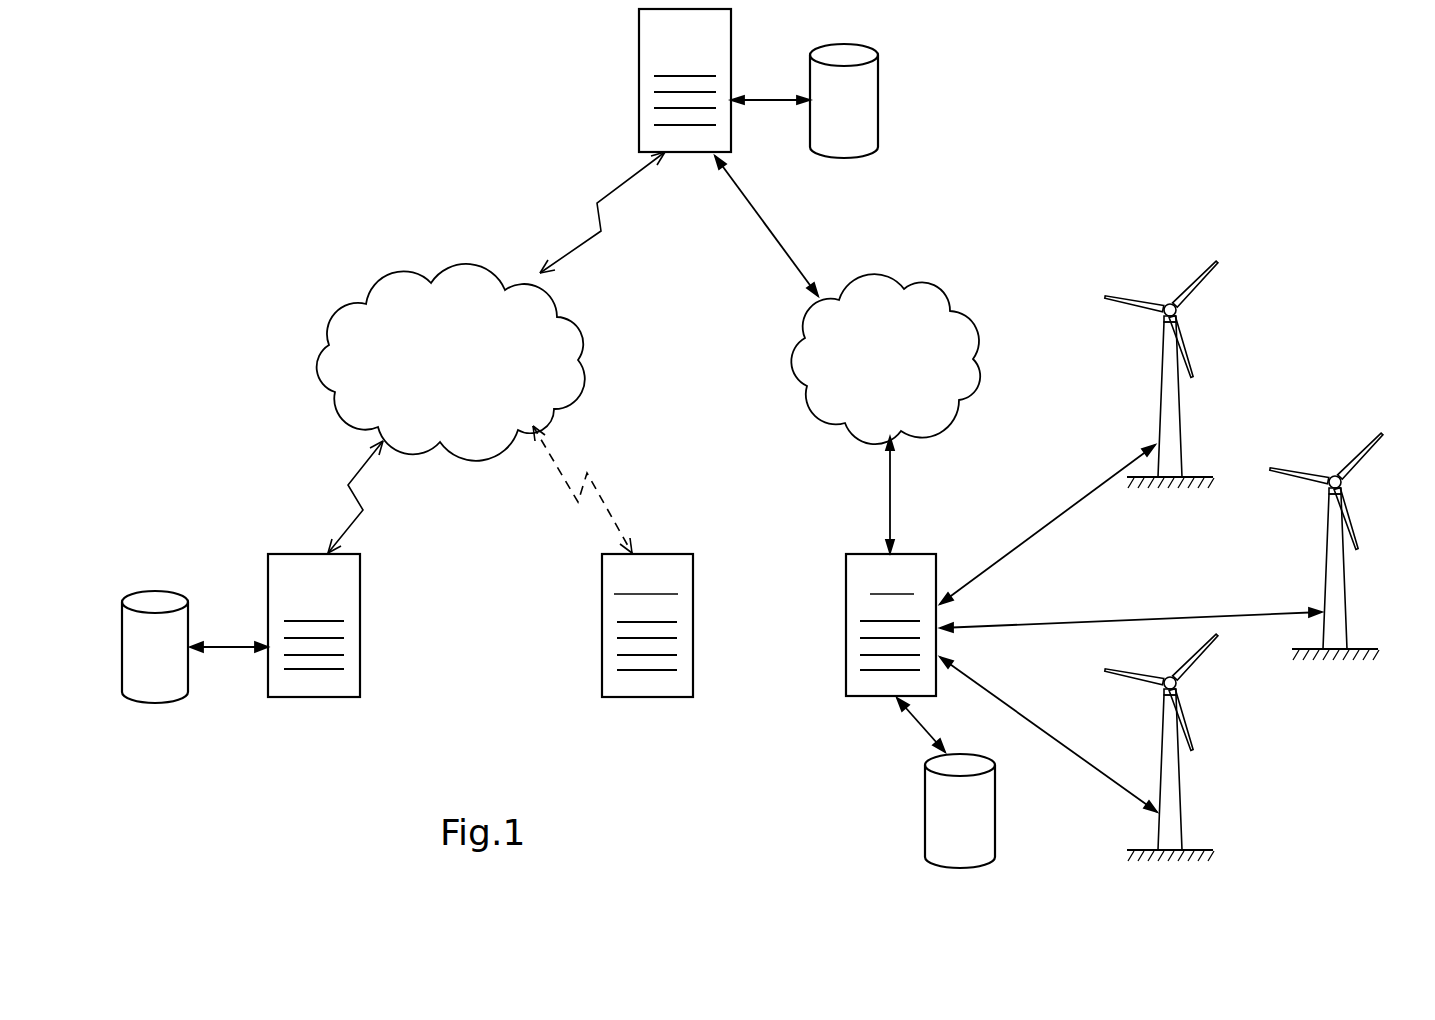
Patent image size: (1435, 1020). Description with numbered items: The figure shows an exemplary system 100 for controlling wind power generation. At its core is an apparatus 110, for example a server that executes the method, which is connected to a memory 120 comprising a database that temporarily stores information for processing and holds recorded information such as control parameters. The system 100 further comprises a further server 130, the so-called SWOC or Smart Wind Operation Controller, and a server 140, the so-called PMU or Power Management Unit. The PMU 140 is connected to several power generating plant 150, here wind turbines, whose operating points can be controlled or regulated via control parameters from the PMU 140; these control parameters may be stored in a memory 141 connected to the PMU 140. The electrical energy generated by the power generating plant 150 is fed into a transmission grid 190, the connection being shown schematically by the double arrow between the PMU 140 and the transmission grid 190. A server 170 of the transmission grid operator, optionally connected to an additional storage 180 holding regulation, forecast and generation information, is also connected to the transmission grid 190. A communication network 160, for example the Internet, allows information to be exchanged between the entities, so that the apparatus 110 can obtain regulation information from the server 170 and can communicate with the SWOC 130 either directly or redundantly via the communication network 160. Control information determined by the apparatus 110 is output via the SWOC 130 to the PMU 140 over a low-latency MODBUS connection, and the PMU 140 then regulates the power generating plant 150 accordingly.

The system 100 is at (1250, 130).
The apparatus 110 is at (313, 698).
The memory 120 is at (155, 703).
The SWOC server 130 is at (645, 698).
The PMU server 140 is at (862, 698).
The memory 141 is at (925, 823).
The power generating plant 150 is at (1181, 430).
The communication network 160 is at (481, 369).
The server 170 is at (639, 80).
The storage 180 is at (878, 100).
The transmission grid 190 is at (913, 369).